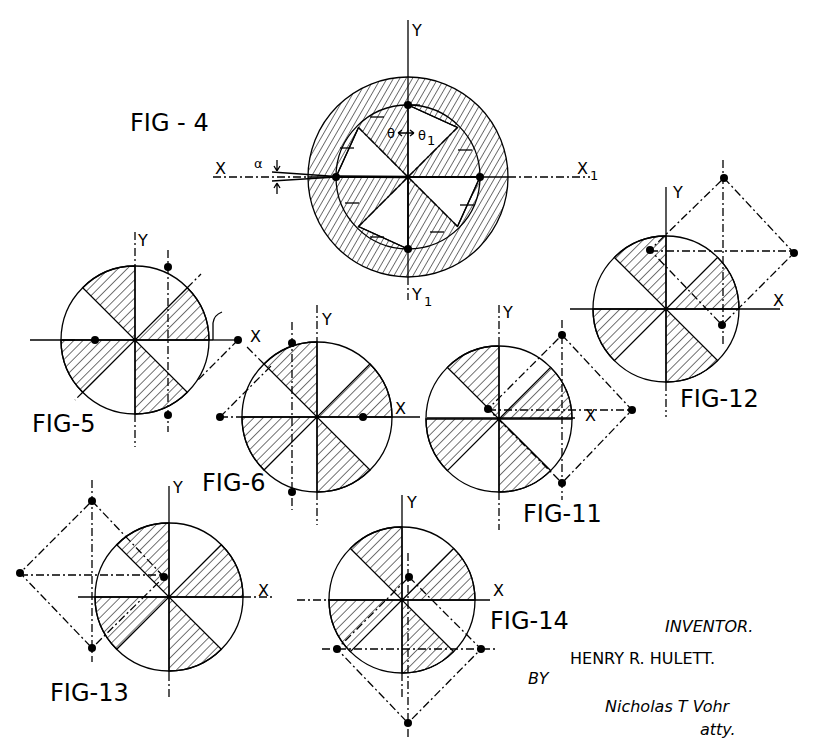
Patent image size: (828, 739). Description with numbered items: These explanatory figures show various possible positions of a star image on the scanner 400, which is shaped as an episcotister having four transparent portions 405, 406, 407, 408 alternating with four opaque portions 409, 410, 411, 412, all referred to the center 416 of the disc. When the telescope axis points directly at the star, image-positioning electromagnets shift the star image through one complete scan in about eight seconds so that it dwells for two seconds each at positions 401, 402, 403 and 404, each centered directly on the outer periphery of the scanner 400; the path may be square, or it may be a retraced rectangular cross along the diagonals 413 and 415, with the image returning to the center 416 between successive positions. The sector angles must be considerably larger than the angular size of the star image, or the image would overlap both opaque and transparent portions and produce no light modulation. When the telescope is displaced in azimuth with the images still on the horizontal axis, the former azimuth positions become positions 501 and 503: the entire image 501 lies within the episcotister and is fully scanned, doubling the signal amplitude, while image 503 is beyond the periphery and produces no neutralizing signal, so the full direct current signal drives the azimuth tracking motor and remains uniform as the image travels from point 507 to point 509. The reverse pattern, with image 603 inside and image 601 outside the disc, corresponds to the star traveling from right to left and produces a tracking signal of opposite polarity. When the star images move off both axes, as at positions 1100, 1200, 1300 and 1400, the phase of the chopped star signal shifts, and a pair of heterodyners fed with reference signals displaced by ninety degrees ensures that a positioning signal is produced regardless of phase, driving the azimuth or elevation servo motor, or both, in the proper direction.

In FIG. 4, the scanner 400 is at (483, 108).
In FIG. 5, the scanner 400 is at (59, 359).
In FIG. 6, the scanner 400 is at (328, 496).
In FIG. 11, the scanner 400 is at (459, 349).
In FIG. 12, the scanner 400 is at (618, 250).
In FIG. 13, the scanner 400 is at (233, 550).
In FIG. 14, the scanner 400 is at (468, 555).
In FIG. 4, the star image position 401 is at (337, 175).
In FIG. 4, the star image position 402 is at (407, 104).
In FIG. 4, the star image position 403 is at (483, 177).
In FIG. 4, the star image position 404 is at (408, 250).
In FIG. 4, the transparent portion 405 is at (347, 148).
In FIG. 4, the transparent portion 406 is at (433, 117).
In FIG. 4, the transparent portion 407 is at (467, 205).
In FIG. 4, the transparent portion 408 is at (377, 237).
In FIG. 4, the opaque portion 409 is at (352, 203).
In FIG. 4, the opaque portion 410 is at (377, 117).
In FIG. 4, the opaque portion 411 is at (465, 150).
In FIG. 4, the opaque portion 412 is at (437, 232).
In FIG. 4, the diagonal 413 is at (456, 176).
In FIG. 5, the diagonal 413 is at (223, 340).
In FIG. 6, the diagonal 413 is at (235, 422).
In FIG. 11, the diagonal 413 is at (605, 413).
In FIG. 12, the diagonal 413 is at (762, 250).
In FIG. 13, the diagonal 413 is at (72, 577).
In FIG. 14, the diagonal 413 is at (397, 645).
In FIG. 4, the diagonal 415 is at (409, 223).
In FIG. 5, the diagonal 415 is at (168, 367).
In FIG. 6, the diagonal 415 is at (292, 412).
In FIG. 11, the diagonal 415 is at (562, 365).
In FIG. 12, the diagonal 415 is at (723, 230).
In FIG. 13, the diagonal 415 is at (92, 557).
In FIG. 14, the diagonal 415 is at (408, 680).
In FIG. 4, the center of the episcotister 416 is at (393, 170).
In FIG. 5, the star image position 501 is at (95, 340).
In FIG. 5, the star image position 503 is at (238, 344).
In FIG. 5, the point 507 is at (63, 338).
In FIG. 5, the point 509 is at (222, 312).
In FIG. 6, the star image 601 is at (217, 417).
In FIG. 6, the star image 603 is at (363, 421).
In FIG. 11, the star position 1100 is at (487, 408).
In FIG. 12, the star image position 1200 is at (648, 250).
In FIG. 13, the star position 1300 is at (164, 577).
In FIG. 14, the star position 1400 is at (409, 577).